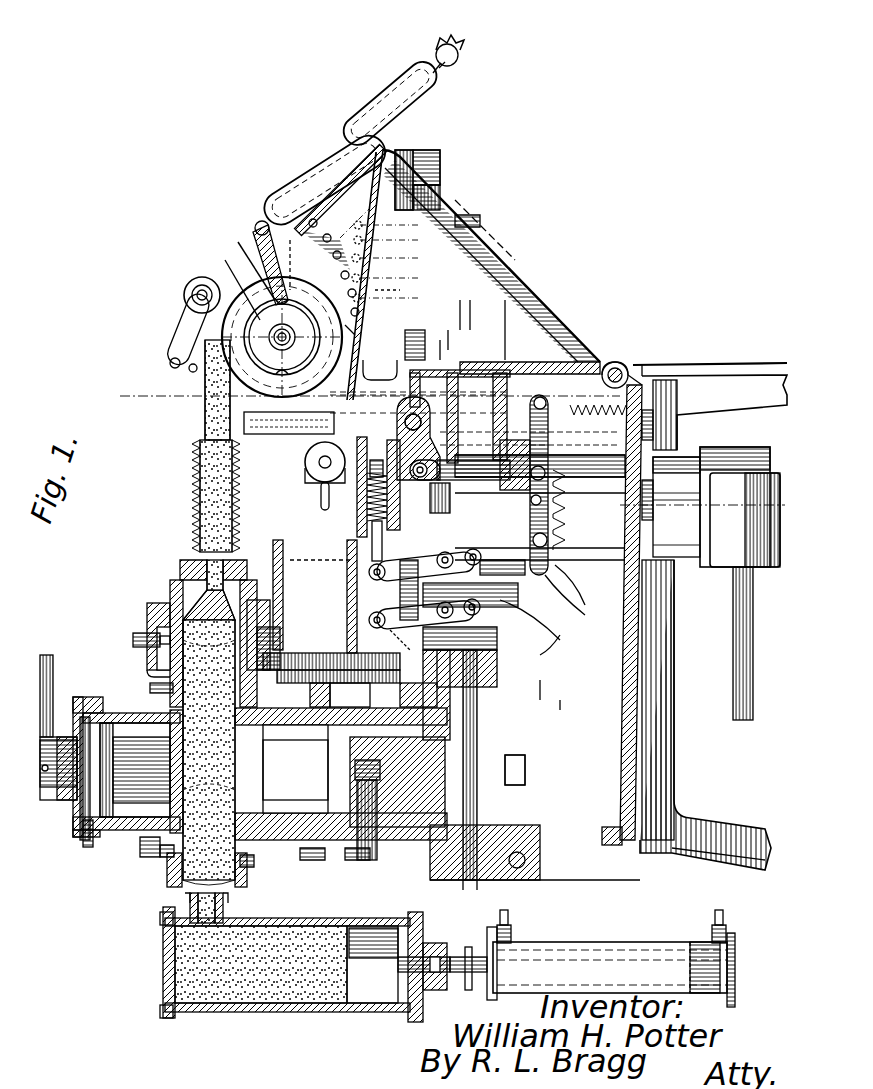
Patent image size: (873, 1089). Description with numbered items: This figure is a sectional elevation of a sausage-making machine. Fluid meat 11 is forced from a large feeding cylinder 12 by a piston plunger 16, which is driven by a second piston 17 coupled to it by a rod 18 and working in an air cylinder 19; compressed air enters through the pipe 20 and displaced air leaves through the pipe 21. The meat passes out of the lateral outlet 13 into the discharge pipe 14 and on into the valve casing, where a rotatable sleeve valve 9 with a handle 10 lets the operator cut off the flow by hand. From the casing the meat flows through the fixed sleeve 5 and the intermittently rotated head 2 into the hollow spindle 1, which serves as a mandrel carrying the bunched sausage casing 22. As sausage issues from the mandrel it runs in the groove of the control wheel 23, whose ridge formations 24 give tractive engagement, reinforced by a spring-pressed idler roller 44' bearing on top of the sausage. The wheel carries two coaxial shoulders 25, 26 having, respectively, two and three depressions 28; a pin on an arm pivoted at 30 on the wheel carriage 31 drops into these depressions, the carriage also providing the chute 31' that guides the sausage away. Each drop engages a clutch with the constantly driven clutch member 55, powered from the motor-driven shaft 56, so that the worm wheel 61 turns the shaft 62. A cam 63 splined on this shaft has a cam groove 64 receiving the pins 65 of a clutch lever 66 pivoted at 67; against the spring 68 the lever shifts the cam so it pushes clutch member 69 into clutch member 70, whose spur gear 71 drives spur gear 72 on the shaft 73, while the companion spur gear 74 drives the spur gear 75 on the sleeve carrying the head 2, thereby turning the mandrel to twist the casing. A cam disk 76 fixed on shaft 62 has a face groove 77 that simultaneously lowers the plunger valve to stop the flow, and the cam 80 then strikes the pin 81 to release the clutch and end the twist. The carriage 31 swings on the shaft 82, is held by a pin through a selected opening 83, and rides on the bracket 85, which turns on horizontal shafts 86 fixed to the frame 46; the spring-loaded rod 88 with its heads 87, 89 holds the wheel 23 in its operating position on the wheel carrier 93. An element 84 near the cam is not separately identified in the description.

The hollow cylindrical spindle 1 is at (200, 500).
The intermittently rotated head 2 is at (190, 565).
The sleeve 5 is at (158, 605).
The sleeve valve 9 is at (130, 840).
The handle 10 is at (53, 665).
The meat or other material 11 is at (262, 870).
The feeding cylinder 12 is at (290, 1010).
The lateral outlet 13 is at (236, 885).
The discharge pipe 14 is at (165, 870).
The piston plunger 16 is at (372, 1005).
The piston 17 is at (685, 945).
The rod 18 is at (450, 975).
The cylinder 19 is at (590, 940).
The pipe 20 is at (716, 925).
The pipe 21 is at (500, 925).
The casing 22 is at (192, 470).
The peripherally grooved wheel 23 is at (238, 250).
The ridge formations 24 is at (296, 300).
The shoulder 25 is at (258, 245).
The shoulder 26 is at (275, 395).
The depressions 28 is at (285, 245).
The shaft 30 is at (433, 319).
The wheel carriage 31 is at (324, 172).
The chute 31' is at (359, 108).
The roller lever 44' is at (188, 301).
The frame 46 is at (464, 509).
The clutch member 55 is at (575, 410).
The motor driven shaft 56 is at (735, 640).
The worm wheel 61 is at (405, 505).
The shaft 62 is at (468, 882).
The cam 63 is at (500, 590).
The cam groove 64 is at (580, 600).
The pins 65 is at (571, 585).
The clutch lever 66 is at (372, 572).
The pivot 67 is at (150, 688).
The spring 68 is at (380, 610).
The clutch member 69 is at (420, 580).
The clutch member 70 is at (440, 640).
The spur gear 71 is at (272, 560).
The spur gear 72 is at (285, 680).
The shaft 73 is at (356, 690).
The spur gear 74 is at (400, 690).
The spur gear 75 is at (554, 714).
The cam disk 76 is at (380, 780).
The cam groove 77 is at (520, 780).
The cam 80 is at (562, 622).
The pin 81 is at (447, 297).
The shaft 82 is at (305, 462).
The openings 83 is at (510, 575).
The pin 84 is at (344, 328).
The bracket 85 is at (468, 226).
The horizontal shafts 86 is at (501, 309).
The head 87 is at (473, 302).
The rod 88 is at (424, 138).
The head 89 is at (411, 324).
The carrier 93 is at (316, 528).